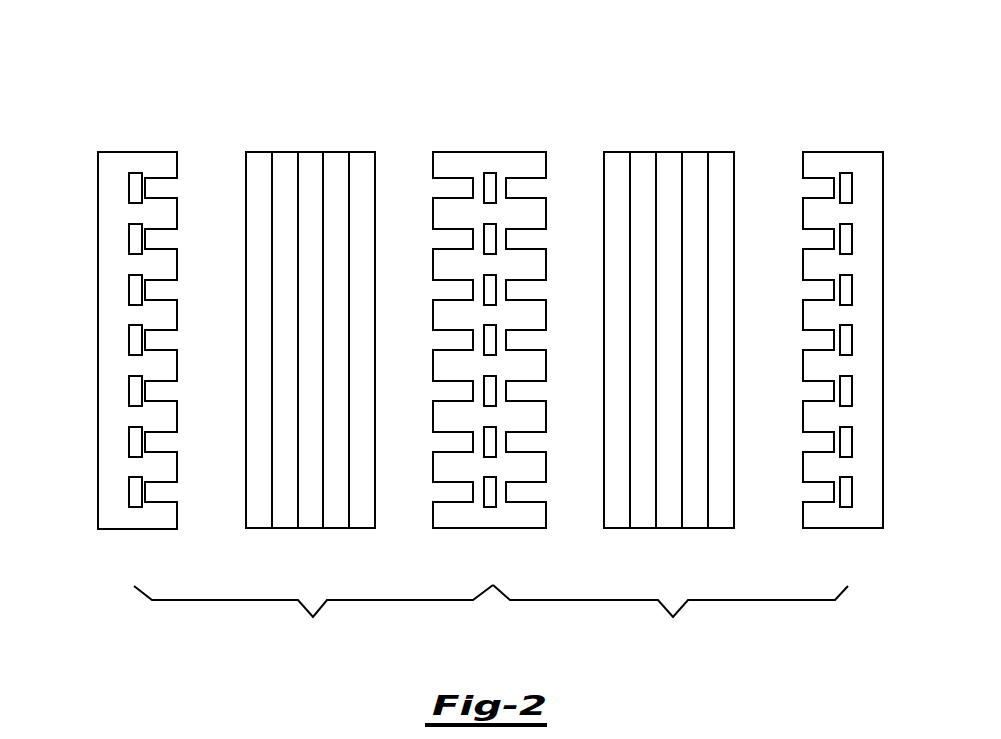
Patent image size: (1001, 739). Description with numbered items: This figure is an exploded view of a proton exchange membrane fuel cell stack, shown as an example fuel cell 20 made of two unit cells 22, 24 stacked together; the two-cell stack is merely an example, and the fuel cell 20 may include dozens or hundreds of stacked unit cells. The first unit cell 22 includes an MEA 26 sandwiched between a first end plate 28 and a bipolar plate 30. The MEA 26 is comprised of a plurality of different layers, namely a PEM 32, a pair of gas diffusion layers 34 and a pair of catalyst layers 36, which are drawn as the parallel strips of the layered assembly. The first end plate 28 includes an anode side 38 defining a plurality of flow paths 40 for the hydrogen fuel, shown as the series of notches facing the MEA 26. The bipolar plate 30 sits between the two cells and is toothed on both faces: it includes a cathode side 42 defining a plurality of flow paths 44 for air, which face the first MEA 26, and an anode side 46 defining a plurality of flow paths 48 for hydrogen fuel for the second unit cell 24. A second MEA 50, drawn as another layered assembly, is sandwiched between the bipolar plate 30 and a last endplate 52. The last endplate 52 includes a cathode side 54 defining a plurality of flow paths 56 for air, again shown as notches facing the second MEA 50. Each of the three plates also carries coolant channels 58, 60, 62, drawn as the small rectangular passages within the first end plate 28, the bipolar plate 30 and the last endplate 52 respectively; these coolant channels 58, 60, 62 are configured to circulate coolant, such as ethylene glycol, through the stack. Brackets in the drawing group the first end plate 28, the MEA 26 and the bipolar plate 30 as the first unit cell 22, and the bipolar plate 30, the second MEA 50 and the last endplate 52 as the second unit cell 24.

The fuel cell 20 is at (137, 67).
The first unit cell 22 is at (313, 619).
The second unit cell 24 is at (670, 619).
The MEA 26 is at (388, 96).
The first end plate 28 is at (112, 152).
The bipolar plate 30 is at (460, 152).
The PEM 32 is at (311, 168).
The gas diffusion layers 34 is at (258, 287).
The catalyst layers 36 is at (287, 515).
The anode side 38 is at (177, 163).
The flow paths 40 is at (175, 338).
The cathode side 42 is at (433, 163).
The flow paths 44 is at (438, 237).
The anode side 46 is at (546, 163).
The flow paths 48 is at (541, 237).
The second MEA 50 is at (747, 96).
The last endplate 52 is at (828, 152).
The cathode side 54 is at (803, 163).
The flow paths 56 is at (798, 237).
The coolant channel 58 is at (130, 443).
The coolant channel 60 is at (493, 438).
The coolant channel 62 is at (852, 440).